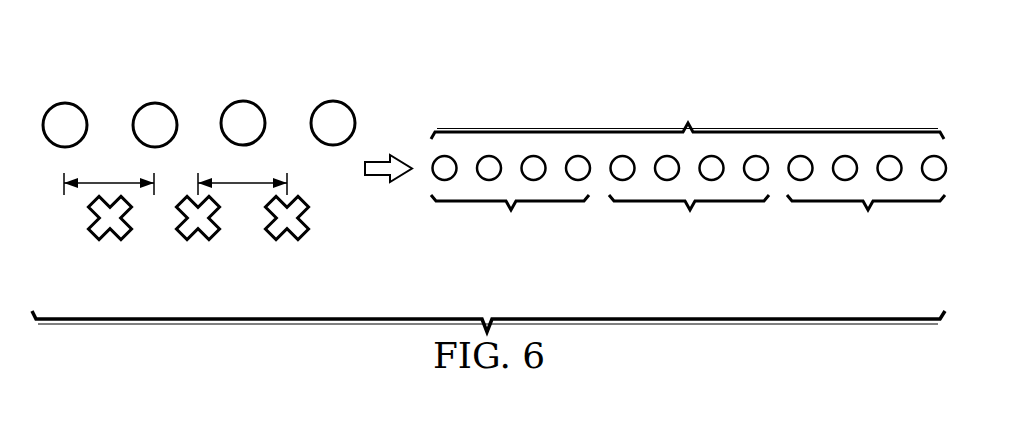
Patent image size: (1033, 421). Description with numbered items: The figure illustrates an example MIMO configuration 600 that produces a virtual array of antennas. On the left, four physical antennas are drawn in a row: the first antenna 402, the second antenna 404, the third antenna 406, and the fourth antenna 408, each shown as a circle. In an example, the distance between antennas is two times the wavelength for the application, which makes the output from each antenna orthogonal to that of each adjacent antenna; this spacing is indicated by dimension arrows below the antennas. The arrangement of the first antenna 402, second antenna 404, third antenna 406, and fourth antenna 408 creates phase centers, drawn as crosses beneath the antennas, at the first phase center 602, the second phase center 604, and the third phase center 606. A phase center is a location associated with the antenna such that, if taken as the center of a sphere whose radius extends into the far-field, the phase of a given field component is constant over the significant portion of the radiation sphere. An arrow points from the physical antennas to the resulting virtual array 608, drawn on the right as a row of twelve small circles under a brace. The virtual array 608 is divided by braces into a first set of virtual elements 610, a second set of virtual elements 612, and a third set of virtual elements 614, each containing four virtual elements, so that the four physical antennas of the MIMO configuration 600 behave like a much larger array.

The MIMO configuration 600 is at (856, 36).
The first antenna 402 is at (63, 101).
The second antenna 404 is at (153, 101).
The third antenna 406 is at (241, 99).
The fourth antenna 408 is at (331, 99).
The first phase center 602 is at (110, 241).
The second phase center 604 is at (198, 241).
The third phase center 606 is at (287, 241).
The virtual array 608 is at (688, 157).
The first set of virtual elements 610 is at (510, 199).
The second set of virtual elements 612 is at (689, 199).
The third set of virtual elements 614 is at (866, 199).